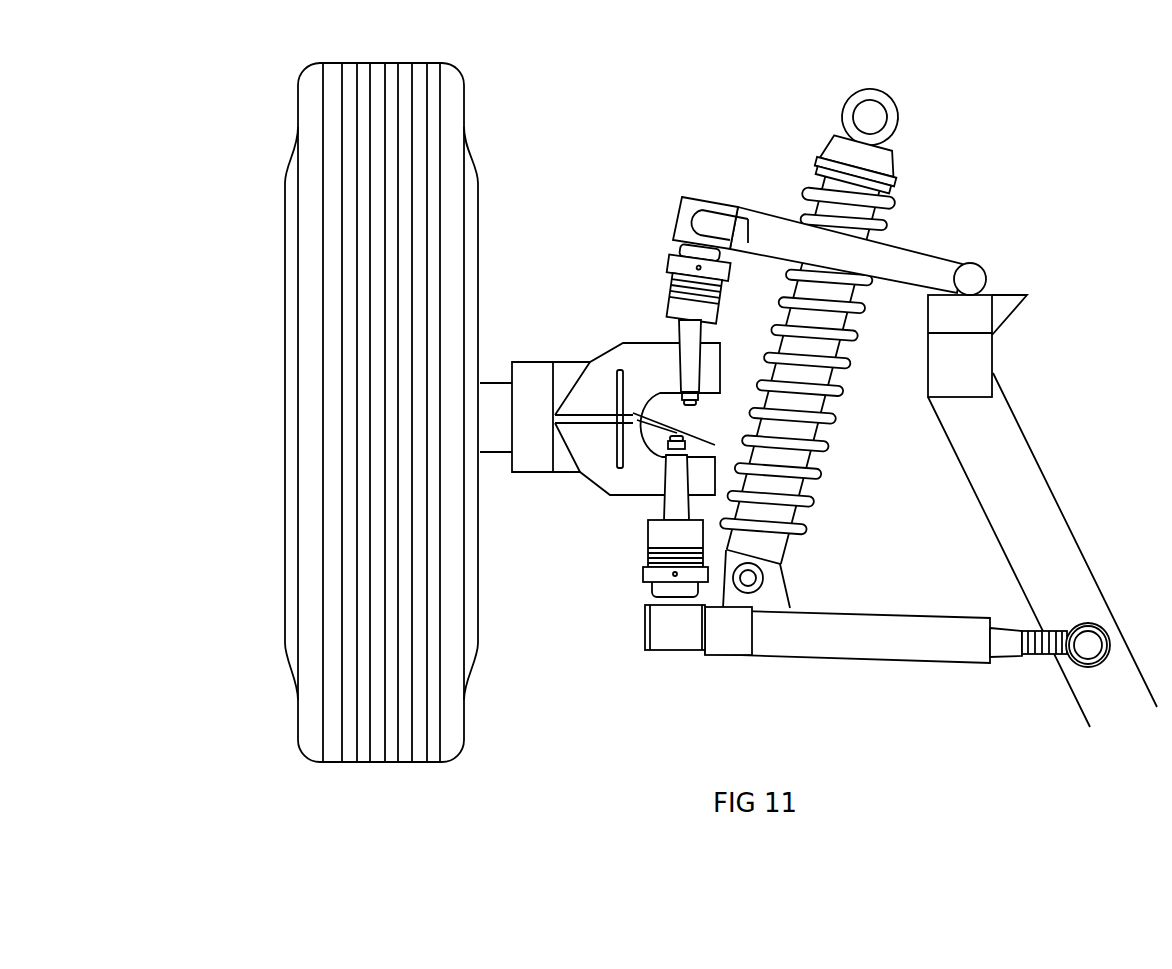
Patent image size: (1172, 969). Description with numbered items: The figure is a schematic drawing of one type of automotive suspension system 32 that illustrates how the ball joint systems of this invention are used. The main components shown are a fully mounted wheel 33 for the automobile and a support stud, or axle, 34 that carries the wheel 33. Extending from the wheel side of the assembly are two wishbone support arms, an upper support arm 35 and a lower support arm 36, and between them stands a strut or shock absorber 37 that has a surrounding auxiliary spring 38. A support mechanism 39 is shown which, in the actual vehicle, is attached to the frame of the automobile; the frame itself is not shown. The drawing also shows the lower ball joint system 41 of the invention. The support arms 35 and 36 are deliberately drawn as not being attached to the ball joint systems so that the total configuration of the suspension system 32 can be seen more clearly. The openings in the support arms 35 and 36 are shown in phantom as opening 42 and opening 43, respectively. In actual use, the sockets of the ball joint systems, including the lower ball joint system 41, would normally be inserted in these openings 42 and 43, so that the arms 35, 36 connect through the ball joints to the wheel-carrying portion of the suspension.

The automotive suspension system 32 is at (818, 373).
The fully mounted wheel 33 is at (329, 419).
The support stud (axle) 34 is at (485, 383).
The upper wishbone support arm 35 is at (858, 343).
The lower wishbone support arm 36 is at (877, 657).
The strut or shock absorber 37 is at (858, 164).
The auxiliary spring 38 is at (880, 223).
The support mechanism 39 is at (1030, 483).
The lower ball joint system 41 is at (668, 270).
The opening in upper support arm 42 is at (710, 200).
The opening in lower support arm 43 is at (672, 652).